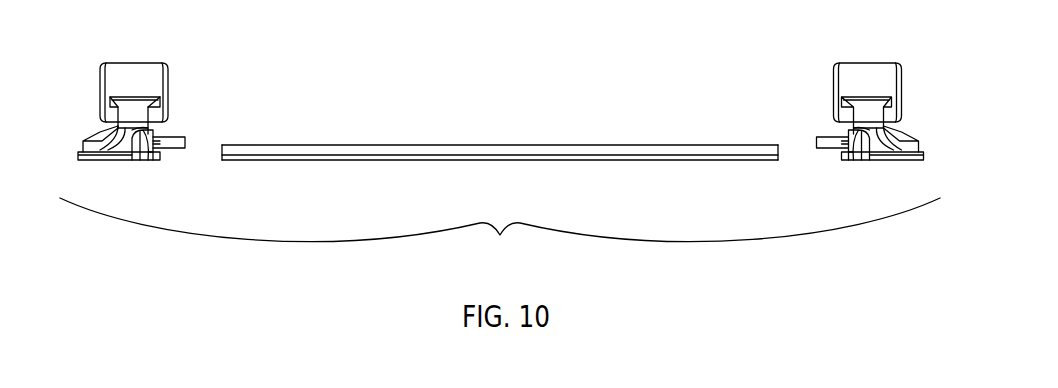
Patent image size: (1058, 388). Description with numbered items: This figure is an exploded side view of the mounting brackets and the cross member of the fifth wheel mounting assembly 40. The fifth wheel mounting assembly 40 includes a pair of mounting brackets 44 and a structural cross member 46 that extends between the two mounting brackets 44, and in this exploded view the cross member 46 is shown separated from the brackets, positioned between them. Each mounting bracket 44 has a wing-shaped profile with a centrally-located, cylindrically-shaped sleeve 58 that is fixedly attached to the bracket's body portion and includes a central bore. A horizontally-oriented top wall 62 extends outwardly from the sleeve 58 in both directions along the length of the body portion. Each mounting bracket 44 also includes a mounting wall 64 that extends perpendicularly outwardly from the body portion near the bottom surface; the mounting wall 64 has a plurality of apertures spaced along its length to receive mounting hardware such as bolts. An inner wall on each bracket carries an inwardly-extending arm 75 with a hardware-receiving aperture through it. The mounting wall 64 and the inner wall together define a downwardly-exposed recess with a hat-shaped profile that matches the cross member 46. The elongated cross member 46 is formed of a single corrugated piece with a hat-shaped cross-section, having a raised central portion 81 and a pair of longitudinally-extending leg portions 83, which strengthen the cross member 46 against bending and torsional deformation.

The fifth wheel mounting assembly 40 is at (500, 233).
The mounting bracket 44 is at (503, 100).
The cross member 46 is at (500, 138).
The sleeve 58 is at (120, 72).
The top wall 62 is at (150, 145).
The mounting wall 64 is at (905, 160).
The inwardly-extending arm 75 is at (175, 135).
The raised central portion 81 is at (617, 162).
The leg portions 83 is at (567, 143).